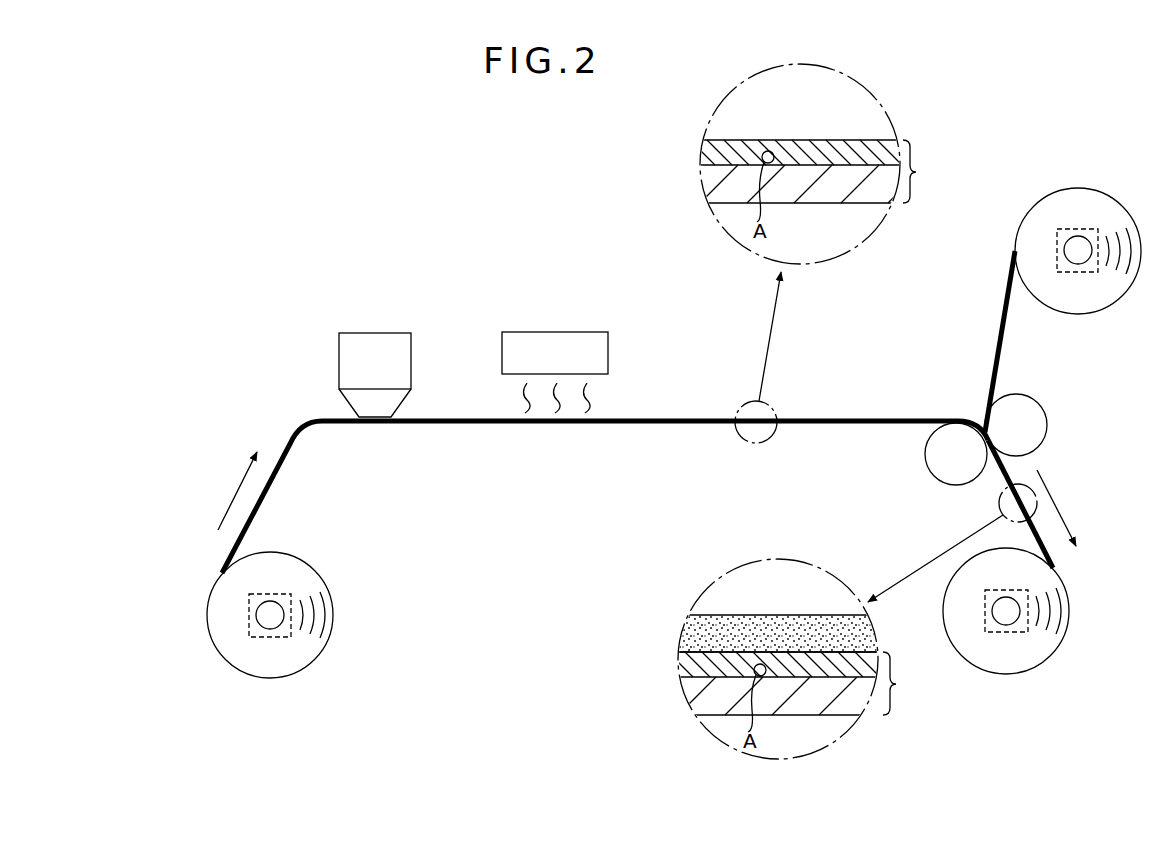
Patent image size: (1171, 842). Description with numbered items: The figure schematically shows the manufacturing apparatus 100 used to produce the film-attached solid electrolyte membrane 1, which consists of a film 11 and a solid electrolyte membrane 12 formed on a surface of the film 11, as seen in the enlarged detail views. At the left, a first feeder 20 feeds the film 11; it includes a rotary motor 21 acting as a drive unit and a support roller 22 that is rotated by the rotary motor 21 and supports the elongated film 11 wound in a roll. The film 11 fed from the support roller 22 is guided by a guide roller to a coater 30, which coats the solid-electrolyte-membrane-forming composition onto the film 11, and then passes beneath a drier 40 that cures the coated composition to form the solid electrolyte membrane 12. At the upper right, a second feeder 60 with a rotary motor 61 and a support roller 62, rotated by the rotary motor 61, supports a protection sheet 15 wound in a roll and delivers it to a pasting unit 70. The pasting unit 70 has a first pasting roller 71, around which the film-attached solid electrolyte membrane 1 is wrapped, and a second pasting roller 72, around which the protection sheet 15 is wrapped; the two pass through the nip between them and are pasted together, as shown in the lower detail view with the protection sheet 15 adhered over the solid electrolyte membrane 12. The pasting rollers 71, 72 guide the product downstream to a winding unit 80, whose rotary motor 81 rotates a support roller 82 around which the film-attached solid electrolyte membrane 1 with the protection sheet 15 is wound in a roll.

The manufacturing apparatus 100 is at (320, 170).
The film-attached solid electrolyte membrane 1 is at (909, 427).
The film 11 is at (262, 506).
The solid electrolyte membrane 12 is at (780, 140).
The protection sheet 15 is at (1002, 345).
The first feeder 20 is at (332, 630).
The rotary motor 21 is at (280, 640).
The support roller 22 is at (262, 627).
The coater 30 is at (372, 333).
The drier 40 is at (551, 332).
The second feeder 60 is at (1114, 300).
The rotary motor 61 is at (1068, 229).
The support roller 62 is at (1081, 238).
The pasting unit 70 is at (1055, 468).
The first pasting roller 71 is at (926, 476).
The second pasting roller 72 is at (1047, 428).
The winding unit 80 is at (1057, 655).
The rotary motor 81 is at (995, 633).
The support roller 82 is at (1015, 626).